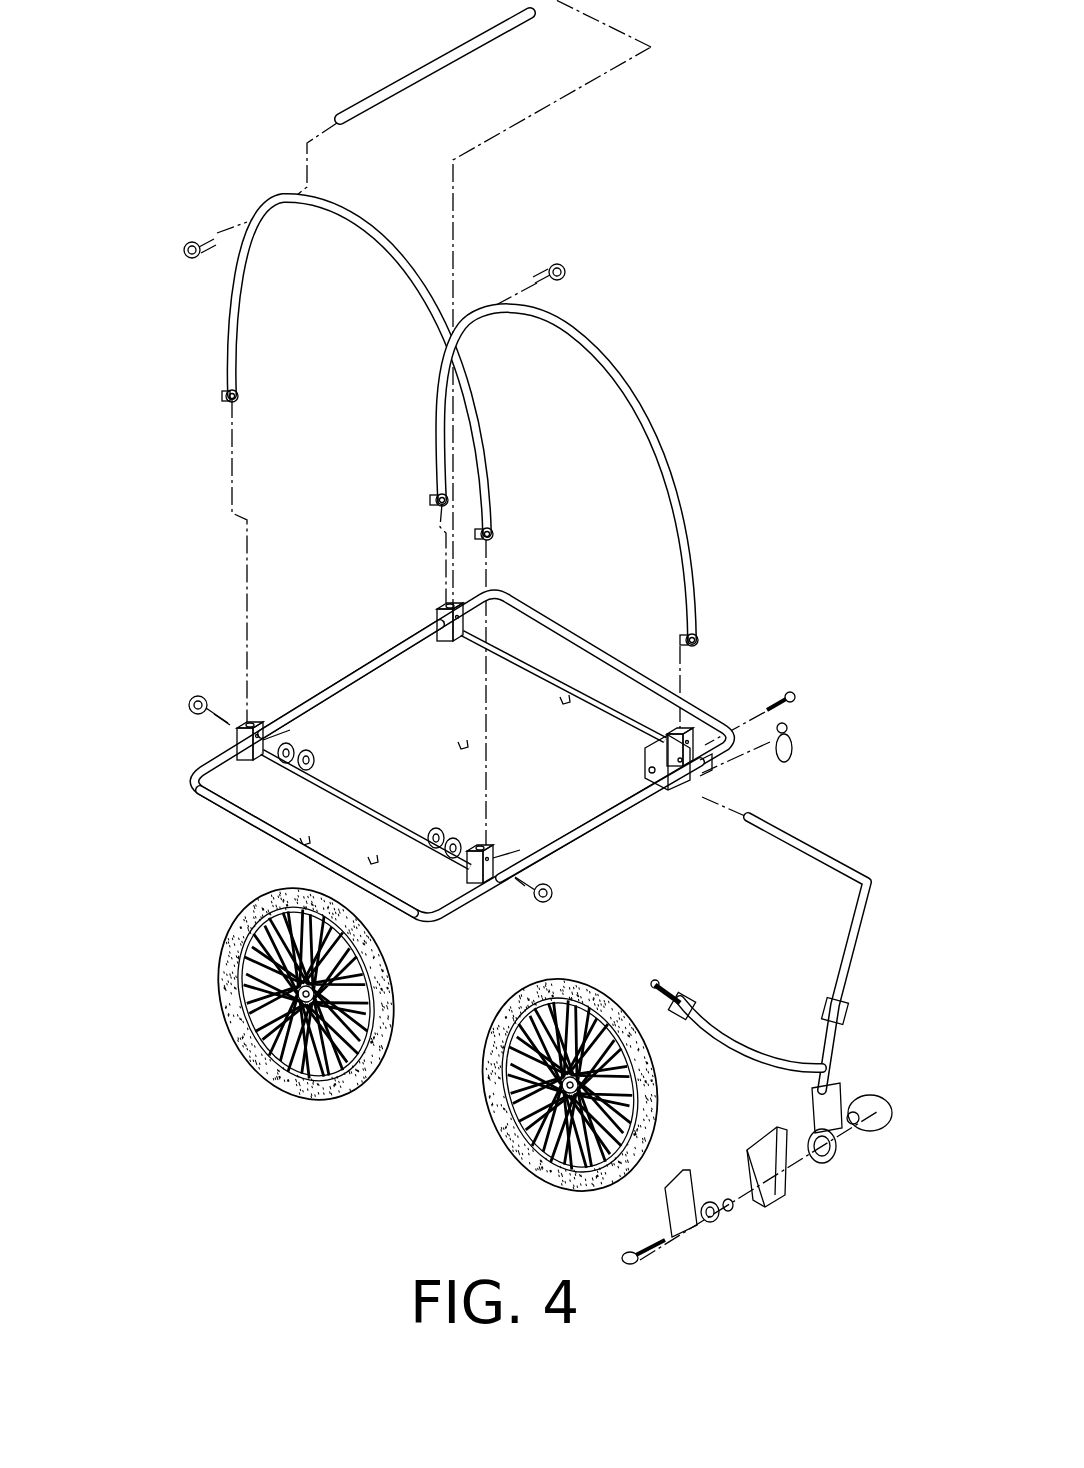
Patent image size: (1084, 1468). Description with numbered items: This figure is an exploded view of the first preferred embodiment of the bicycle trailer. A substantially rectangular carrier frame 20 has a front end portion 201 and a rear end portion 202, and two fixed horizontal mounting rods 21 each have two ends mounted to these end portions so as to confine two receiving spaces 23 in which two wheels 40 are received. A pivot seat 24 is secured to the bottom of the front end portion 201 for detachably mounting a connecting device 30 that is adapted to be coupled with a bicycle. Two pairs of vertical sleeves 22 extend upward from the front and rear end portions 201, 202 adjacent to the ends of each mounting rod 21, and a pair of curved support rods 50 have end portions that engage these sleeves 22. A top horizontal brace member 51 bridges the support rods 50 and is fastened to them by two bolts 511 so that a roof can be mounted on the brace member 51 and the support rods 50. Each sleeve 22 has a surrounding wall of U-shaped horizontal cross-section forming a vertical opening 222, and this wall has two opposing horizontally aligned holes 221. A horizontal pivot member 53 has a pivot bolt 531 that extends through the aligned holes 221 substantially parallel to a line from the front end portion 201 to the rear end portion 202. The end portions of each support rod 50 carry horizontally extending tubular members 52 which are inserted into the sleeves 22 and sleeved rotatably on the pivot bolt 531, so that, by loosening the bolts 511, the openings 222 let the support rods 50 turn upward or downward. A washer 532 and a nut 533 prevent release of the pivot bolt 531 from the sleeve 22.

The carrier frame 20 is at (212, 816).
The mounting rod 21 is at (325, 793).
The vertical sleeve 22 is at (245, 724).
The receiving space 23 is at (288, 828).
The pivot seat 24 is at (688, 790).
The connecting device 30 is at (866, 964).
The wheel 40 is at (327, 1110).
The curved support rod 50 is at (485, 432).
The top horizontal brace member 51 is at (380, 98).
The tubular member 52 is at (245, 388).
The horizontal pivot member 53 is at (194, 698).
The front end portion 201 is at (612, 815).
The rear end portion 202 is at (373, 660).
The hole 221 is at (288, 731).
The vertical opening 222 is at (255, 722).
The bolt 511 is at (192, 242).
The pivot bolt 531 is at (192, 712).
The washer 532 is at (454, 838).
The nut 533 is at (318, 757).